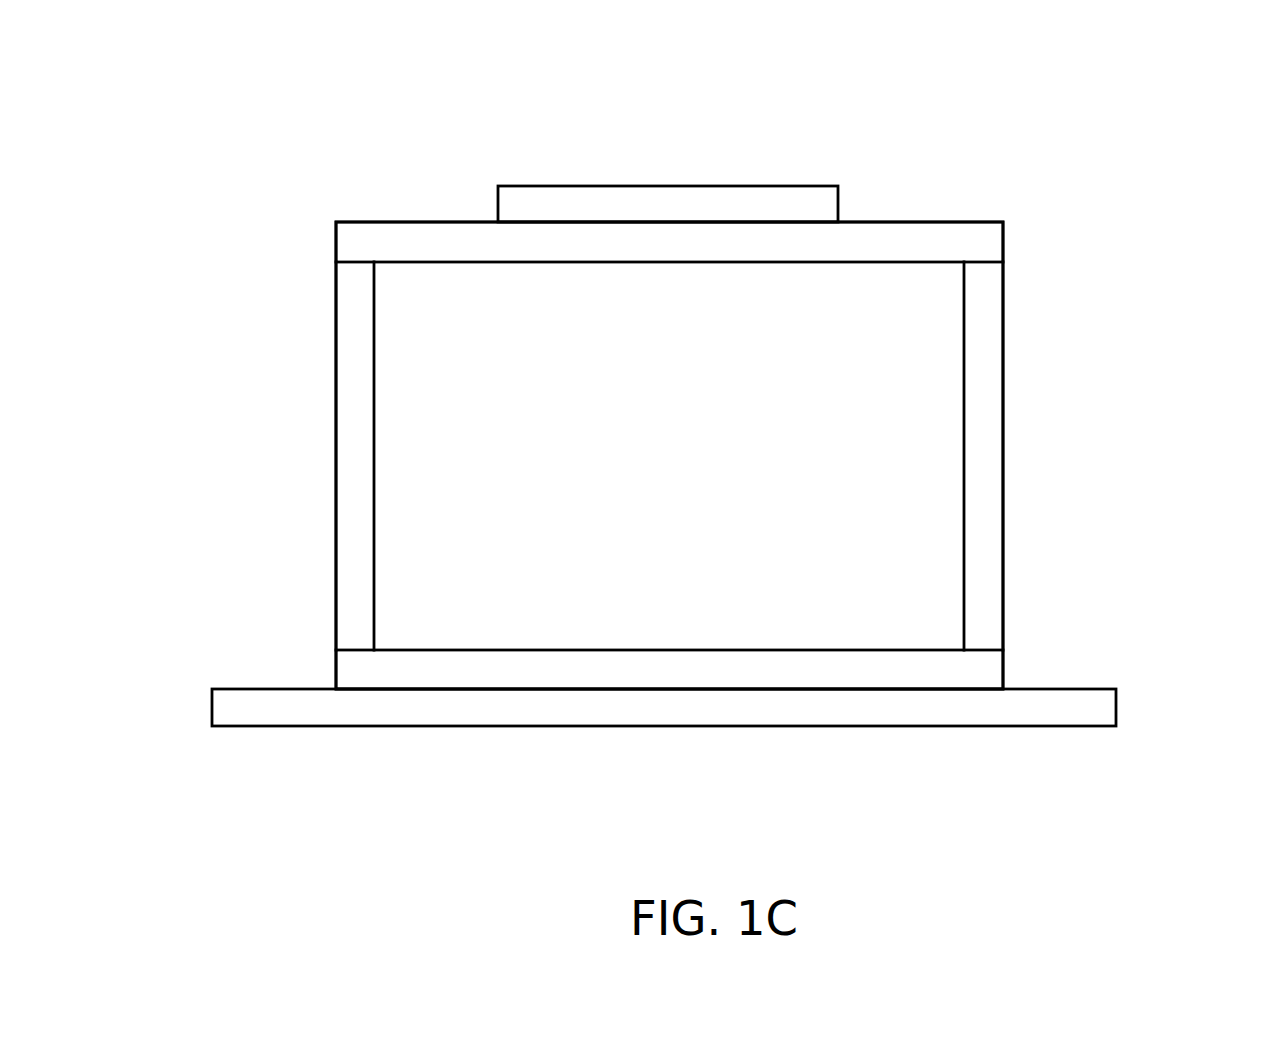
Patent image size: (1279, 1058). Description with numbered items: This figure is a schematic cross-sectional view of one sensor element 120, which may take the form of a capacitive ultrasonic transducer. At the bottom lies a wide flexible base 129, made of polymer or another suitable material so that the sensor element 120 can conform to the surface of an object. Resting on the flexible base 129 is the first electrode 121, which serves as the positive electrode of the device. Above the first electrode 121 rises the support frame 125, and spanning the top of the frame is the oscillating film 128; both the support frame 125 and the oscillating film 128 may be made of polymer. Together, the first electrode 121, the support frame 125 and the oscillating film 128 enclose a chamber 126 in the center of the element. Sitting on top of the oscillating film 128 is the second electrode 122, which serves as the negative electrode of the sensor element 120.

The sensor element 120 is at (293, 145).
The first electrode 121 is at (1004, 661).
The second electrode 122 is at (838, 196).
The support frame 125 is at (1003, 446).
The chamber 126 is at (722, 467).
The oscillating film 128 is at (1003, 231).
The flexible base 129 is at (1117, 710).